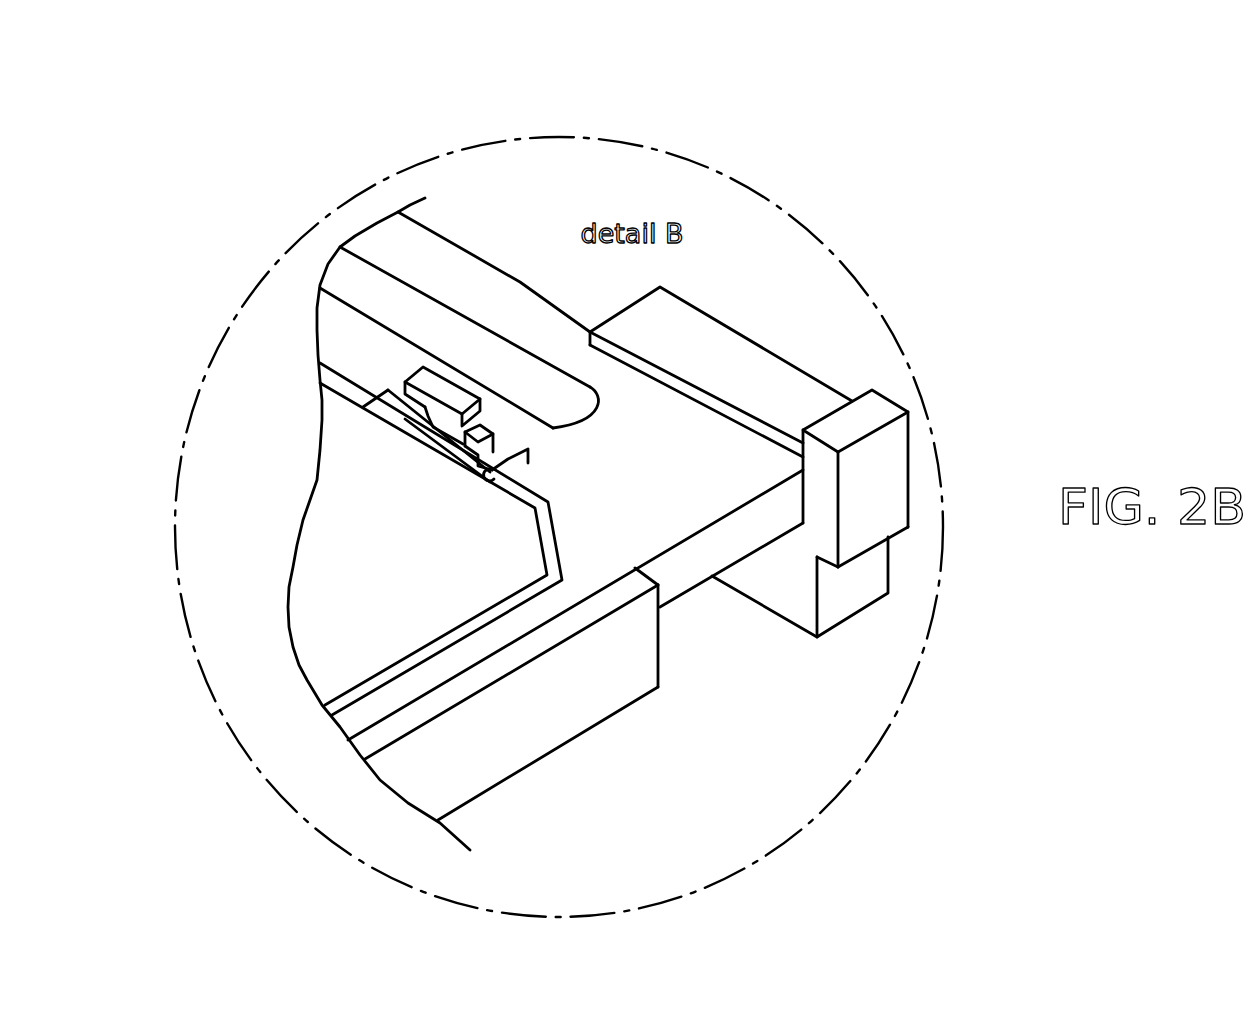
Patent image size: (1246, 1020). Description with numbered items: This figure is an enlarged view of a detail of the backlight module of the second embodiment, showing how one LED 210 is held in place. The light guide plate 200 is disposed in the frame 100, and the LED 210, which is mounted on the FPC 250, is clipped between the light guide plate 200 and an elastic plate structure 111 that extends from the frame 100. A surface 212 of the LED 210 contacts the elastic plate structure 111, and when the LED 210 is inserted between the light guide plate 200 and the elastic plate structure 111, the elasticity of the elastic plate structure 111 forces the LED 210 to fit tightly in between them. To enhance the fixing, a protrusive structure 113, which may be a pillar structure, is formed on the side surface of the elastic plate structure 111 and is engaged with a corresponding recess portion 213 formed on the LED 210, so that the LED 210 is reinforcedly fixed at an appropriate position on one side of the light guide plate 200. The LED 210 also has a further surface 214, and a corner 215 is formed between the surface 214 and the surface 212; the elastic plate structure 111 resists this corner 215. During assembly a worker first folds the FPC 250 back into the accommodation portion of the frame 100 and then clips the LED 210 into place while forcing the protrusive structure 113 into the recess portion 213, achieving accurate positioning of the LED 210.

The frame 100 is at (375, 230).
The elastic plate structure 111 is at (425, 382).
The protrusive structure 113 is at (445, 426).
The light guide plate 200 is at (333, 450).
The LED 210 is at (460, 453).
The surface 212 is at (527, 417).
The recess portion 213 is at (461, 432).
The surface 214 is at (493, 482).
The corner 215 is at (528, 455).
The FPC 250 is at (330, 383).